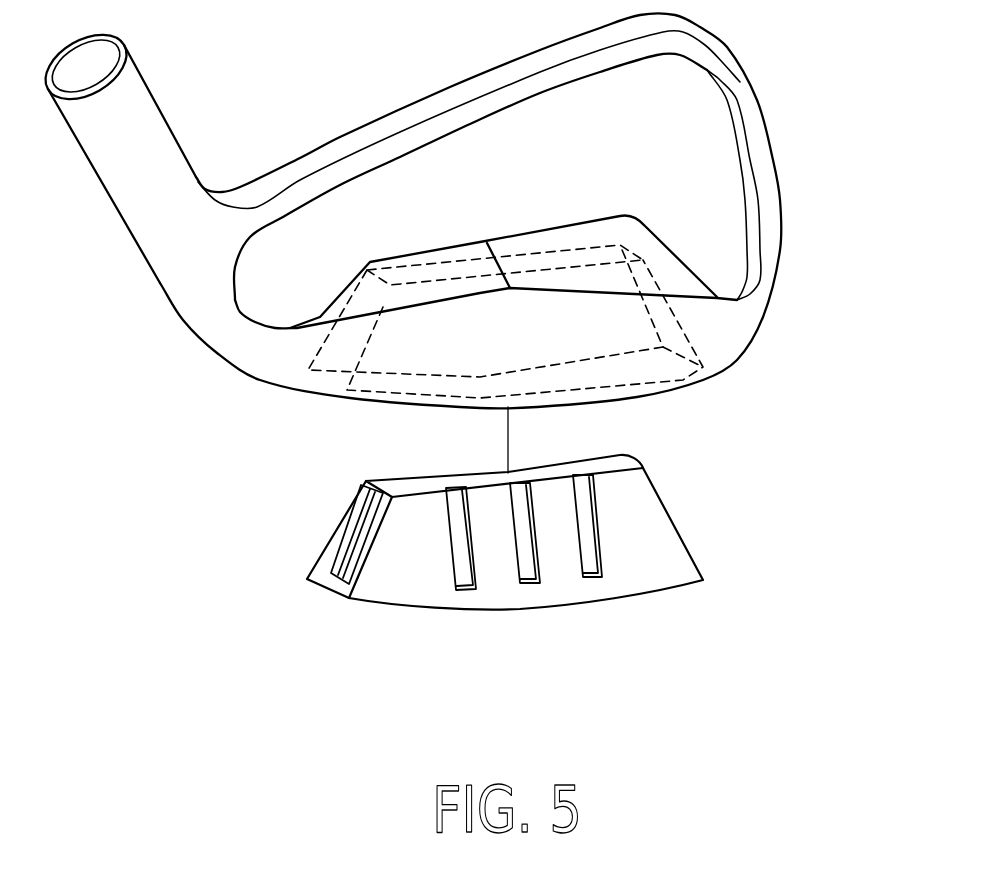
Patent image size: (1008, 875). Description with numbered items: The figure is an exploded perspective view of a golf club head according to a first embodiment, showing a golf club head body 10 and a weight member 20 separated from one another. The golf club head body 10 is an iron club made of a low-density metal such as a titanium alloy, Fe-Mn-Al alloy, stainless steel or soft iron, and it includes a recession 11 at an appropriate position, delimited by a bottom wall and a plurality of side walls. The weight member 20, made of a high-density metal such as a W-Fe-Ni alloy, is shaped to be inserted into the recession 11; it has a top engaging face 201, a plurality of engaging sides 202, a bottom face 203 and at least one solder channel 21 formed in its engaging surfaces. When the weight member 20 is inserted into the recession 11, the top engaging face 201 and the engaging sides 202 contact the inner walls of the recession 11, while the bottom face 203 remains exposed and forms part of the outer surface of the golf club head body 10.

The golf club head body 10 is at (758, 135).
The recession 11 is at (690, 380).
The weight member 20 is at (533, 568).
The top engaging face 201 is at (403, 482).
The engaging sides 202 is at (418, 592).
The bottom face 203 is at (320, 590).
The solder channel 21 is at (360, 537).